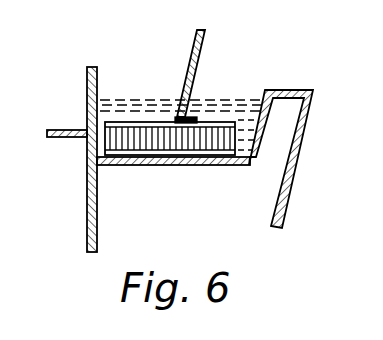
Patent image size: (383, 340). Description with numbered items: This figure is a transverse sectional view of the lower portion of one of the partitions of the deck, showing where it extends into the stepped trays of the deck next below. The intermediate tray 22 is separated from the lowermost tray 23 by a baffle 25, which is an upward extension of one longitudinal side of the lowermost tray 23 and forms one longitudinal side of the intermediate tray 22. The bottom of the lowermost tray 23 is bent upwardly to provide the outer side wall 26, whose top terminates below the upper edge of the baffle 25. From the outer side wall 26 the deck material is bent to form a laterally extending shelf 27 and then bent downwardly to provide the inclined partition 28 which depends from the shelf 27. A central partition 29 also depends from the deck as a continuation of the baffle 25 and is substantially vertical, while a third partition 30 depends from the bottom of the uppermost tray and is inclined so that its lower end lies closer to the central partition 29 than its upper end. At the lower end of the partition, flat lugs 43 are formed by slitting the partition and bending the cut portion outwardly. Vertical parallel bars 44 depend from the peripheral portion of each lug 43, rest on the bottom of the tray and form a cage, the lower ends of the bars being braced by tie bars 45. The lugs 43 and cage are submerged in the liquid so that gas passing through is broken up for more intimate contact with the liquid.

The intermediate tray 22 is at (68, 130).
The lowermost tray 23 is at (178, 167).
The baffle 25 is at (99, 76).
The outer side wall 26 is at (267, 117).
The shelf 27 is at (282, 88).
The inclined partition 28 is at (297, 157).
The central partition 29 is at (98, 237).
The third partition 30 is at (206, 38).
The flat lugs 43 is at (203, 121).
The vertical parallel bars 44 is at (226, 150).
The tie bars 45 is at (143, 158).